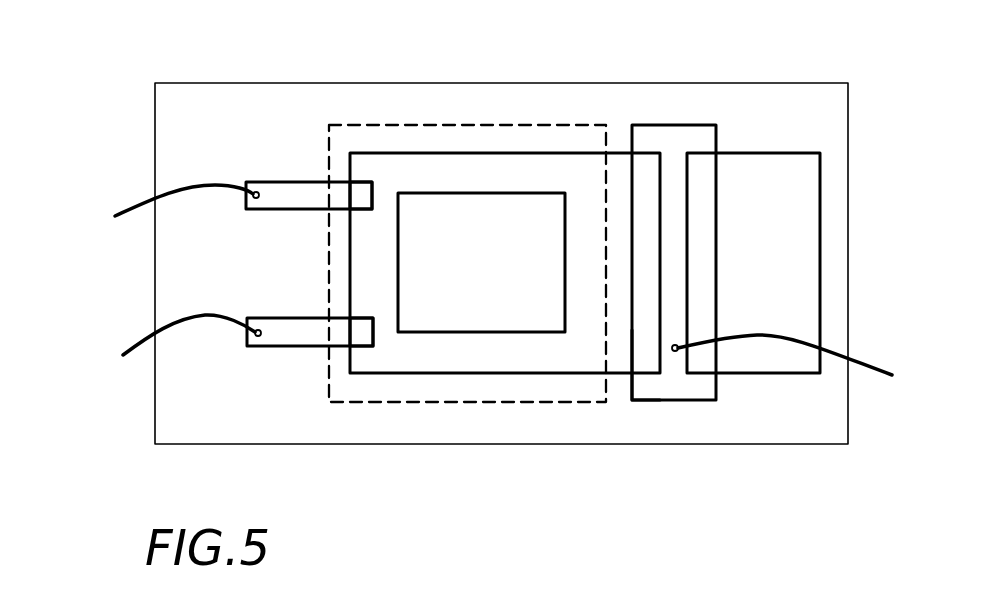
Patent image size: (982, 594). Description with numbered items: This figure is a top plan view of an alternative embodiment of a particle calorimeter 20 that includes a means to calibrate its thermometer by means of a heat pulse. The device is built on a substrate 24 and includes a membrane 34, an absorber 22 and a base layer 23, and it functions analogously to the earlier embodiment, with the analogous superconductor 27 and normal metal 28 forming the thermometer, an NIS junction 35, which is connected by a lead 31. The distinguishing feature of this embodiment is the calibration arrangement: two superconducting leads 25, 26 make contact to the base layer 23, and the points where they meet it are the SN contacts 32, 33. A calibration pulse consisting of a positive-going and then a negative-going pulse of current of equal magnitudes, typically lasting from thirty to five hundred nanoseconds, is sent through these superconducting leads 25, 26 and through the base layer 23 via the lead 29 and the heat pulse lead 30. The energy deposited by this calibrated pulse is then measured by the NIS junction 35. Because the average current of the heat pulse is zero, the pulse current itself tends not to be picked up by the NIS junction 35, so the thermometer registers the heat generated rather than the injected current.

The particle calorimeter 20 is at (121, 108).
The absorber 22 is at (493, 223).
The base layer 23 is at (615, 167).
The substrate 24 is at (295, 102).
The superconducting lead 25 is at (293, 340).
The superconducting lead #2 26 is at (305, 192).
The superconductor 27 is at (675, 141).
The normal metal 28 is at (782, 187).
The lead 29 is at (148, 335).
The heat pulse lead 30 is at (147, 200).
The lead 31 is at (860, 360).
The SN contact 32 is at (363, 192).
The SN contact 33 is at (363, 338).
The membrane 34 is at (547, 402).
The thermometer number 1 35 is at (649, 365).